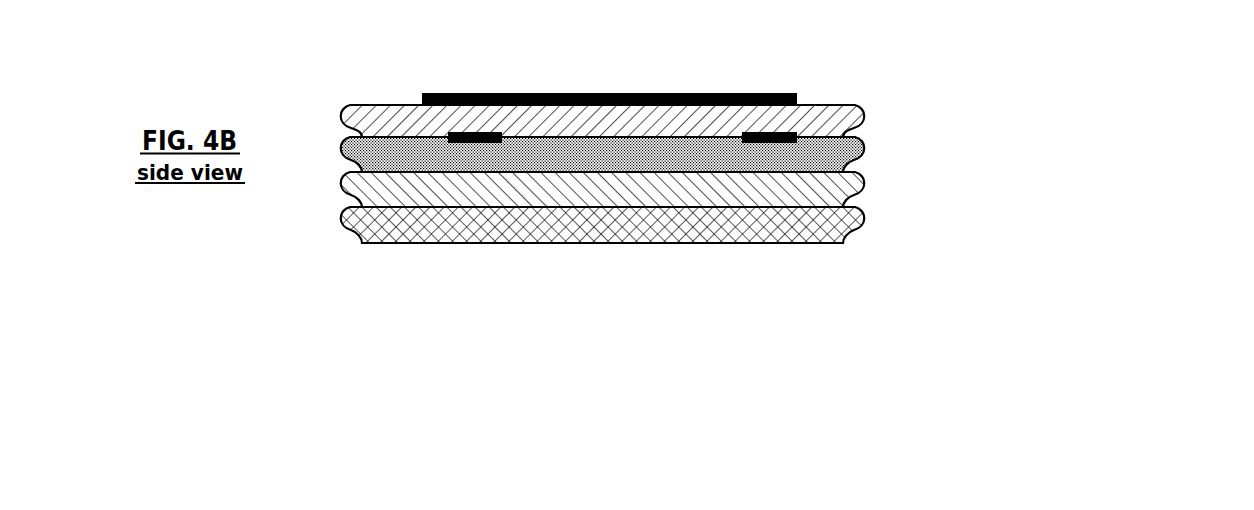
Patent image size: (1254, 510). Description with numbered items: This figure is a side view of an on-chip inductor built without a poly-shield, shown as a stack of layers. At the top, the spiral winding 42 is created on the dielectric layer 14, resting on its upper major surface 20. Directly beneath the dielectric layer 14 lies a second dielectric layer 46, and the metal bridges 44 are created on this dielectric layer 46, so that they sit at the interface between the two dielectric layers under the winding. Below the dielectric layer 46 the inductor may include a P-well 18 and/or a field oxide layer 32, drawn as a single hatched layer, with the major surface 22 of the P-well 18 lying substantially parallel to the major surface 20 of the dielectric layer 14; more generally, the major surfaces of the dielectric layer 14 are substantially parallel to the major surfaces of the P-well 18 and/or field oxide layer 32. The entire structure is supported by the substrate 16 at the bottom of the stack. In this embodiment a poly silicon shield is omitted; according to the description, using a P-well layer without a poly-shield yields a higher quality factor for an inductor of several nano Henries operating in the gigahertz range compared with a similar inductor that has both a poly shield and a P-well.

The dielectric layer 14 is at (852, 62).
The substrate 16 is at (813, 247).
The P-well 18 is at (764, 189).
The major surface 20 is at (406, 102).
The major surface 22 is at (384, 167).
The field oxide layer 32 is at (869, 190).
The spiral winding 42 is at (564, 92).
The metal bridges 44 is at (799, 149).
The dielectric layer 46 is at (869, 153).